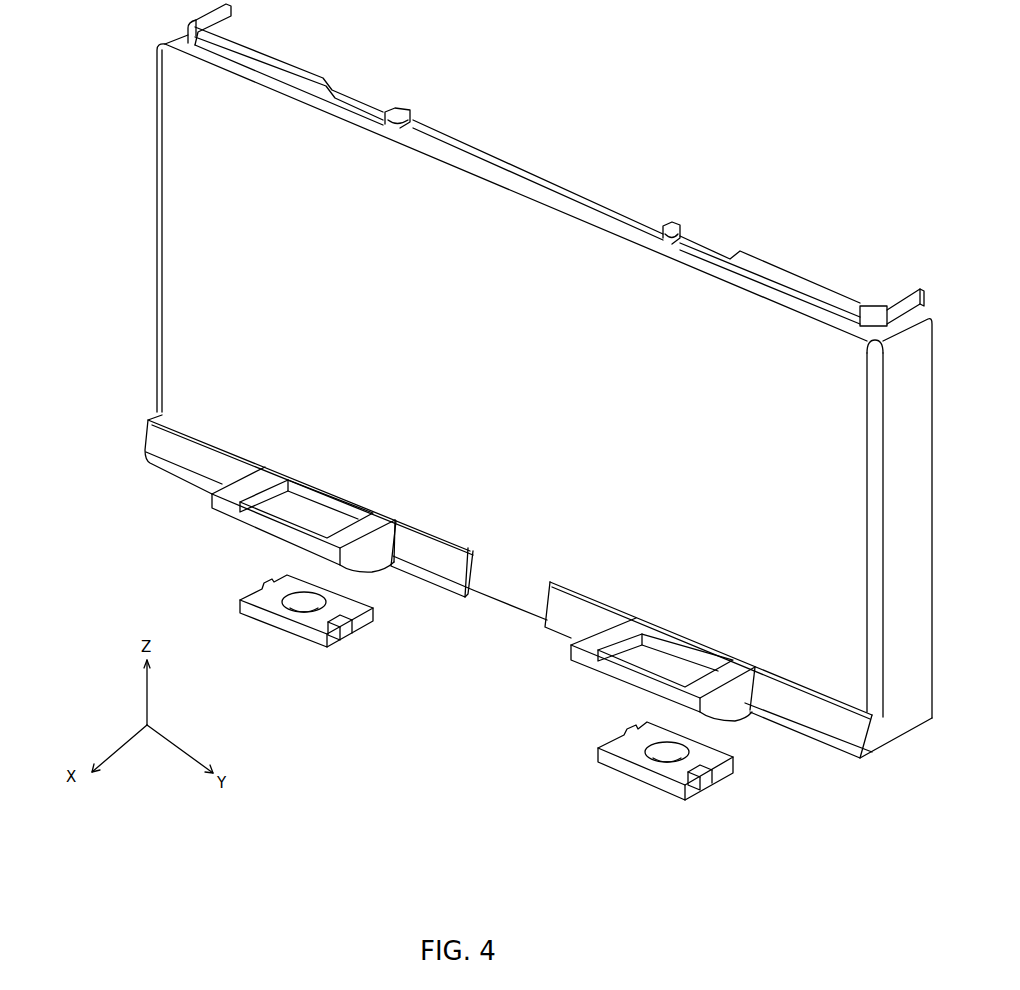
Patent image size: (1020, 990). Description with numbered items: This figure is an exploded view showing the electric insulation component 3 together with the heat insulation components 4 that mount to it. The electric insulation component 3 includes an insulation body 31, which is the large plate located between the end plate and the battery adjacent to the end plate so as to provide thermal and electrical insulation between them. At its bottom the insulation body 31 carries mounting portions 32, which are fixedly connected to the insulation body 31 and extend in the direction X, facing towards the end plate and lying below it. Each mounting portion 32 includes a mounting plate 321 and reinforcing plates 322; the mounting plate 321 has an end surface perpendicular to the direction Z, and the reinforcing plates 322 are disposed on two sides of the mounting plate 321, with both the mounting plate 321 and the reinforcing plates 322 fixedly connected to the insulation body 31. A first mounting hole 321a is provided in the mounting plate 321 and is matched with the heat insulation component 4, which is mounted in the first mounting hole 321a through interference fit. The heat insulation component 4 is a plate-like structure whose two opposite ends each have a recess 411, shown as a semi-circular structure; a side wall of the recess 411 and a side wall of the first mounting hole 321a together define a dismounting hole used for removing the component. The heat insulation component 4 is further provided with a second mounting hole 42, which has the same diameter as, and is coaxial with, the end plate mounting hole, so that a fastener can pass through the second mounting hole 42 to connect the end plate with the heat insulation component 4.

The electric insulation component 3 is at (87, 200).
The insulation body 31 is at (172, 288).
The mounting portion 32 is at (105, 488).
The mounting plate 321 is at (212, 510).
The first mounting hole 321a is at (620, 657).
The reinforcing plates 322 is at (377, 565).
The heat insulation component 4 is at (285, 624).
The recess 411 is at (628, 735).
The second mounting hole 42 is at (653, 757).